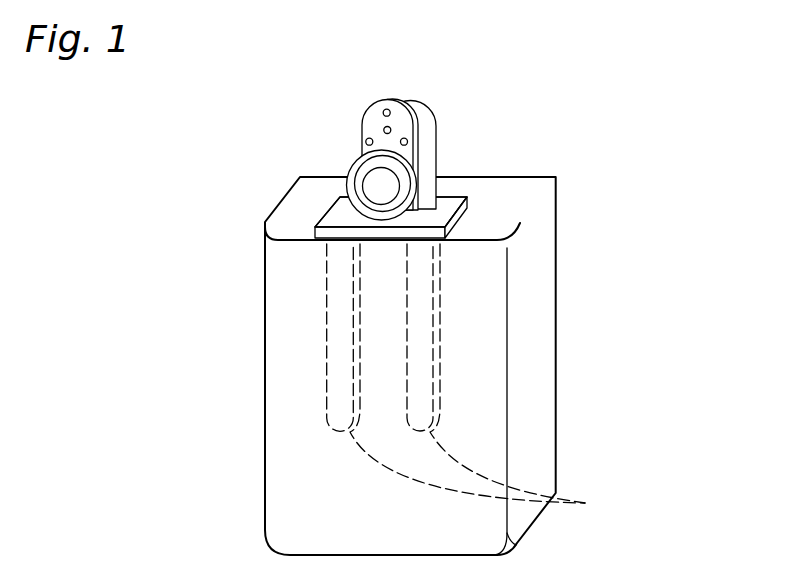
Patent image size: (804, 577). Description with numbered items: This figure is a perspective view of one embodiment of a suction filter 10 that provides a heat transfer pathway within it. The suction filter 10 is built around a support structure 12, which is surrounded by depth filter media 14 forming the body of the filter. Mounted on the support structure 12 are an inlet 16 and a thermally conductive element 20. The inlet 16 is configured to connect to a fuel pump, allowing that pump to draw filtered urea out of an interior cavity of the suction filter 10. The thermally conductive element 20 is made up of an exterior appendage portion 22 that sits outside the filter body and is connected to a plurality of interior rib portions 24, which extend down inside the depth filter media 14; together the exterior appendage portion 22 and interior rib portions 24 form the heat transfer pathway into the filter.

The suction filter 10 is at (482, 319).
The support structure 12 is at (385, 160).
The depth filter media 14 is at (557, 360).
The inlet 16 is at (358, 178).
The thermally conductive element 20 is at (463, 197).
The exterior appendage portion 22 is at (328, 210).
The interior rib portions 24 is at (473, 380).